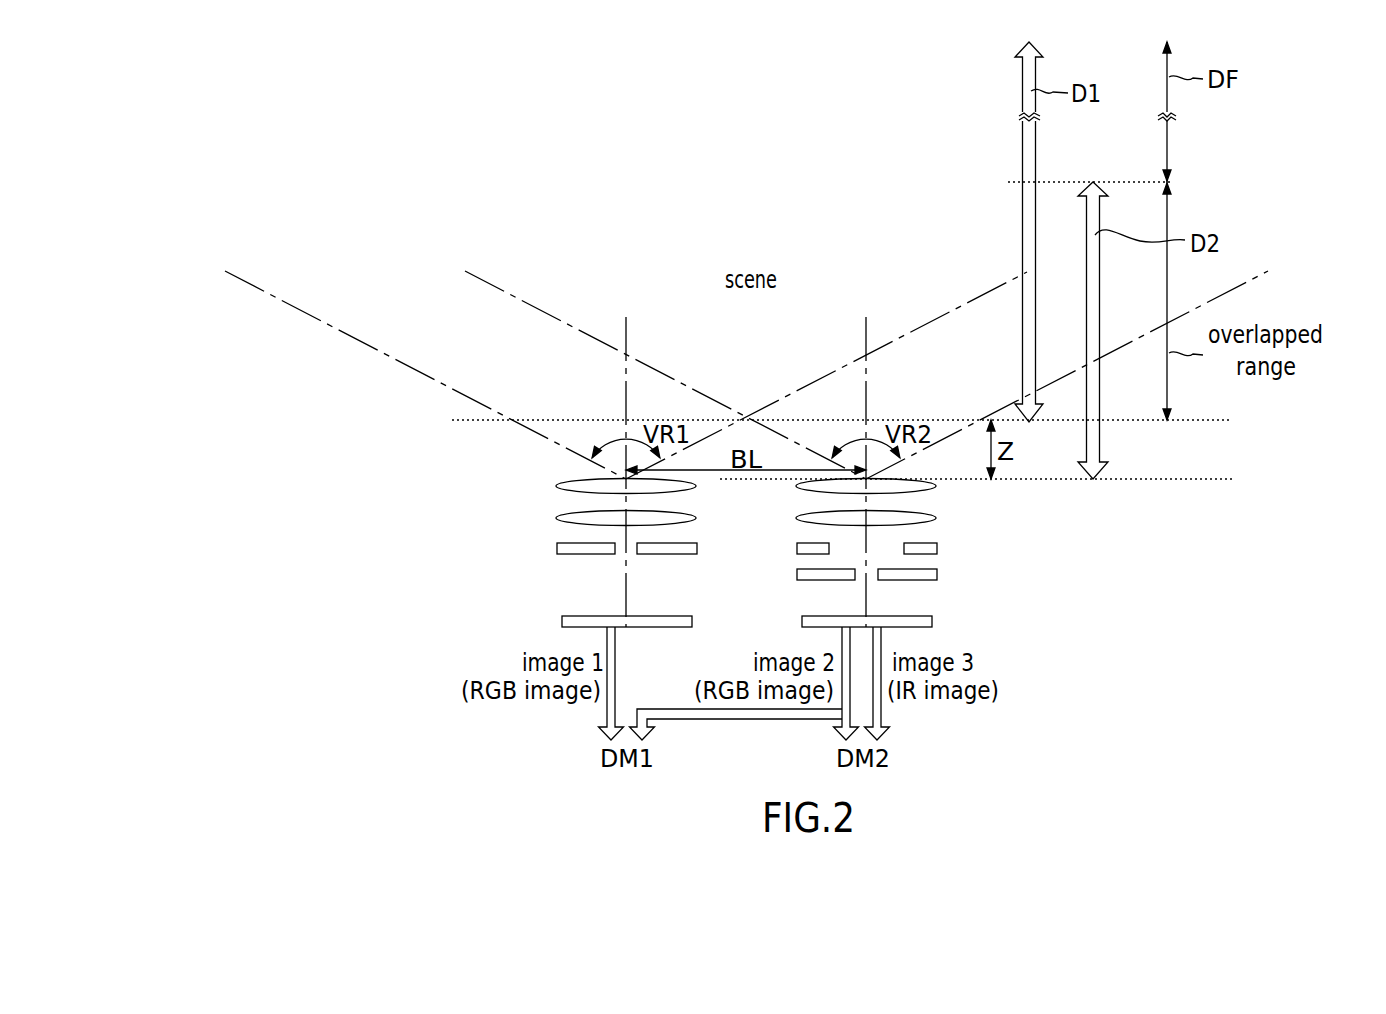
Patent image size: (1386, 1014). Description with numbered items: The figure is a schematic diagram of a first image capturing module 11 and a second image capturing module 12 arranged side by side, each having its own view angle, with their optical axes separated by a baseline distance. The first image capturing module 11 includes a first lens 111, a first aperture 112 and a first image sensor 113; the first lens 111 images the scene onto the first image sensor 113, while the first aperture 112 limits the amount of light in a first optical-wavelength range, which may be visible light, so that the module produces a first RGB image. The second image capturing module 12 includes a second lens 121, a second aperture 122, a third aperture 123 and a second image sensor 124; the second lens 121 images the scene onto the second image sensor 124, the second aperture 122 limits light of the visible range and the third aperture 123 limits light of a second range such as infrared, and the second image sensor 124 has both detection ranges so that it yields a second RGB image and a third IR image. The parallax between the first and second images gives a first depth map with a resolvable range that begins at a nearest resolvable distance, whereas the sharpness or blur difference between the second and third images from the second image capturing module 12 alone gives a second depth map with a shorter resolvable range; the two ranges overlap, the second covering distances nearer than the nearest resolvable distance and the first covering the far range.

The first image capturing module 11 is at (480, 463).
The second image capturing module 12 is at (1014, 463).
The first lens 111 is at (557, 518).
The first aperture 112 is at (557, 549).
The first image sensor 113 is at (562, 622).
The second lens 121 is at (937, 518).
The second aperture 122 is at (937, 548).
The third aperture 123 is at (937, 575).
The second image sensor 124 is at (932, 622).